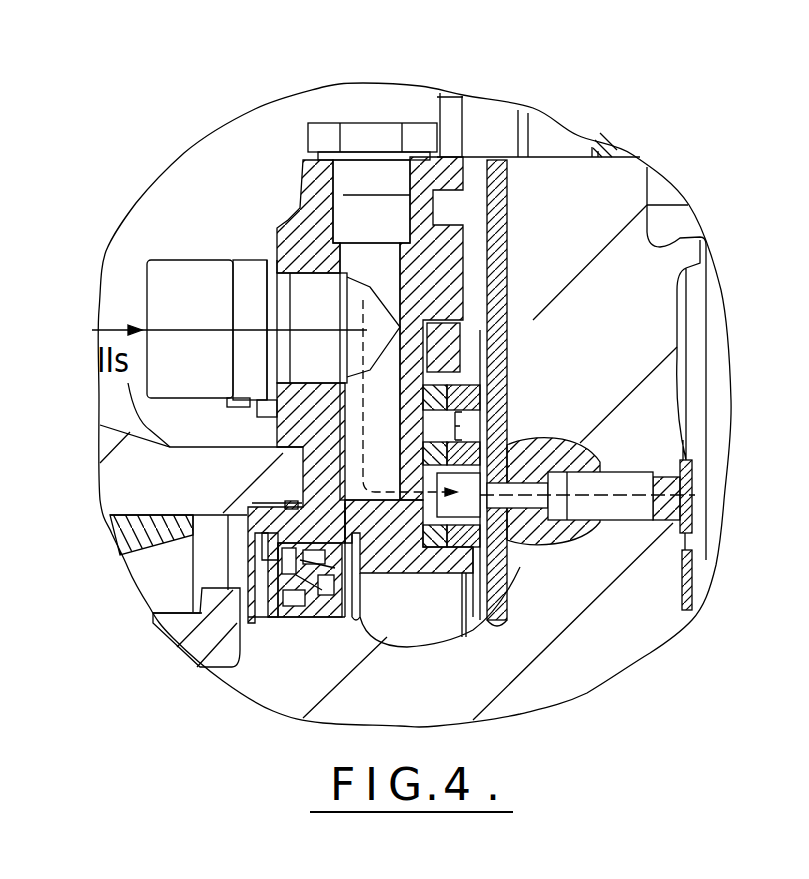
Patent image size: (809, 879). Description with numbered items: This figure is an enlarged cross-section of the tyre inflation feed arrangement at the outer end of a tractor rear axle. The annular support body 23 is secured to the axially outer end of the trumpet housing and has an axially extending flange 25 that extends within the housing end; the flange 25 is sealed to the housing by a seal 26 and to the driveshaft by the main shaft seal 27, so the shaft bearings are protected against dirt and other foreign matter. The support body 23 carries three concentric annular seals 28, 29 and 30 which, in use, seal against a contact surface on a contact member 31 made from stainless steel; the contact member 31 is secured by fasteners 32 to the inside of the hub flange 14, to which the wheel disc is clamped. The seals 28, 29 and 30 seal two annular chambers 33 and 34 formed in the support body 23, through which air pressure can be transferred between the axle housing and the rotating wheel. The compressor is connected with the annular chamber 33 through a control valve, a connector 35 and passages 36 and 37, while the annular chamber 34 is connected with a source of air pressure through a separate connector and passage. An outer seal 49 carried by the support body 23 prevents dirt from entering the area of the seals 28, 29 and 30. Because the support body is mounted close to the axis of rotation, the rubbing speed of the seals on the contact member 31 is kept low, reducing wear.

The hub flange 14 is at (643, 407).
The annular support body 23 is at (317, 230).
The axially extending flange 25 is at (277, 517).
The seal 26 is at (293, 513).
The main shaft seal 27 is at (300, 597).
The annular seal 28 is at (475, 395).
The annular seal 29 is at (468, 452).
The annular seal 30 is at (467, 507).
The contact member 31 is at (500, 225).
The fasteners 32 is at (477, 233).
The annular chamber 33 is at (507, 540).
The annular chamber 34 is at (450, 424).
The connector 35 is at (175, 282).
The passage 36 is at (320, 317).
The passage 37 is at (310, 447).
The outer seal 49 is at (472, 352).